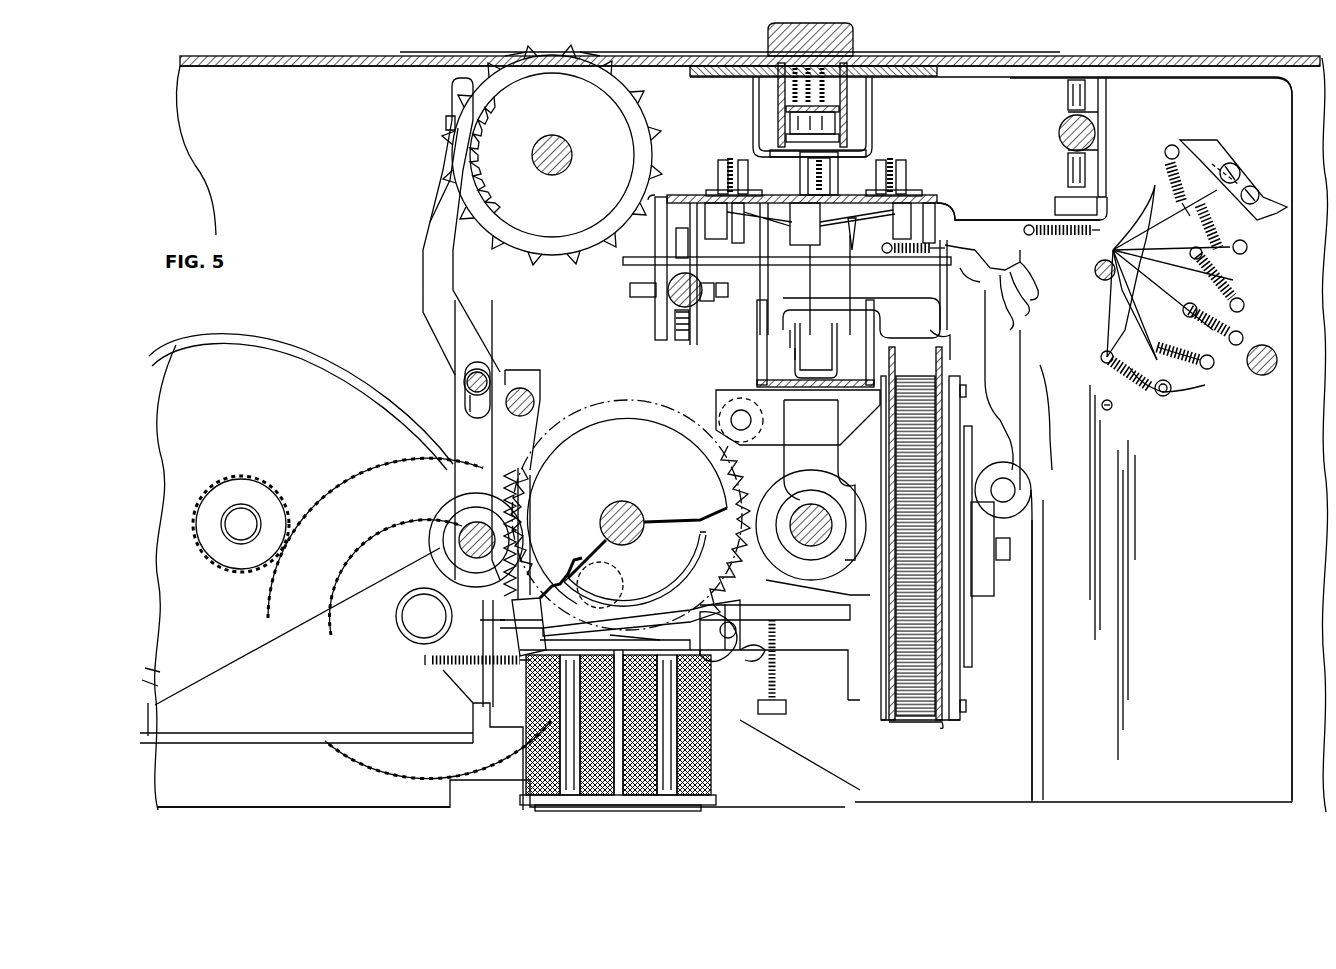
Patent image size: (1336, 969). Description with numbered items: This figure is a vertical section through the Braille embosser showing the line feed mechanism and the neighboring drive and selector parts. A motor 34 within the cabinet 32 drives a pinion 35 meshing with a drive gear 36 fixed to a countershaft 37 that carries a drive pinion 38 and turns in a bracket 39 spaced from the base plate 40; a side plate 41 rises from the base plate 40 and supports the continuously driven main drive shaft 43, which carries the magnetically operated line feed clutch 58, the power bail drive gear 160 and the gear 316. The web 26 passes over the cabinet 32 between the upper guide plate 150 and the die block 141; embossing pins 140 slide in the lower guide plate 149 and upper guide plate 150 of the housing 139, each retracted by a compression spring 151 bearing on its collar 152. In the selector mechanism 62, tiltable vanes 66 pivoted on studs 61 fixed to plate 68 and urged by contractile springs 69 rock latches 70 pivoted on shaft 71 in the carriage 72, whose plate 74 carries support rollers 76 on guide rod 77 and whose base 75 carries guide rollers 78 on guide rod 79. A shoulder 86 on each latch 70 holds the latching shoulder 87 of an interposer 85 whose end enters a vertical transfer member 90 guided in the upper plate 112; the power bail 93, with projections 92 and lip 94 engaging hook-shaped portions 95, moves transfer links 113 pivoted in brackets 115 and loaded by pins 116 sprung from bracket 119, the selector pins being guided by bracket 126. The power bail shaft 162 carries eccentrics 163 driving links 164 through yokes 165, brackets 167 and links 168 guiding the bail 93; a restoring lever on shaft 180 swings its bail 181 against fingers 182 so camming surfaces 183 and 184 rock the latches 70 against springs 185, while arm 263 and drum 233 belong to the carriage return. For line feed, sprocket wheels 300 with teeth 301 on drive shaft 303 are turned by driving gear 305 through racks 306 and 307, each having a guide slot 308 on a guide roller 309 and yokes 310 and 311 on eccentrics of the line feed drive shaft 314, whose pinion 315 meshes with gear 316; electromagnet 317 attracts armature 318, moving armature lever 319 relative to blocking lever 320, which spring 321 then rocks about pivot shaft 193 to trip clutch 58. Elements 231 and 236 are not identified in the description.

The web 26 is at (1216, 52).
The cabinet 32 is at (318, 55).
The motor 34 is at (296, 346).
The pinion 35 is at (238, 476).
The drive gear 36 is at (344, 472).
The countershaft 37 is at (396, 628).
The drive pinion 38 is at (333, 573).
The bracket 39 is at (240, 664).
The base plate 40 is at (496, 806).
The side plate 41 is at (1283, 92).
The main drive shaft 43 is at (612, 505).
The clutch 58 is at (688, 585).
The pivot studs 61 is at (1175, 388).
The selector mechanism 62 is at (1162, 409).
The tiltable vanes 66 is at (1222, 236).
The vertically extending plate 68 is at (1031, 750).
The contractile springs 69 is at (1166, 167).
The latches 70 is at (1152, 240).
The pivot shaft 71 is at (1113, 256).
The carriage 72 is at (993, 212).
The upwardly extending plate 74 is at (1107, 128).
The base 75 is at (627, 265).
The support rollers 76 is at (1067, 95).
The guide rod 77 is at (1059, 131).
The guide rollers 78 is at (676, 240).
The guide rod 79 is at (700, 300).
The interposers 85 is at (950, 305).
The shoulder 86 is at (1005, 262).
The latching shoulder 87 is at (1034, 310).
The vertical transfer member 90 is at (780, 238).
The power bail projections 92 is at (816, 350).
The power bail 93 is at (745, 358).
The horizontally extending lip 94 is at (886, 312).
The hook-shaped portion 95 is at (945, 335).
The upper plate 112 is at (930, 197).
The transfer link 113 is at (867, 239).
The brackets 115 is at (683, 197).
The pin 116 is at (731, 156).
The bracket 119 is at (718, 156).
The bracket 126 is at (800, 168).
The embossing pin housing 139 is at (858, 95).
The embossing pins 140 is at (786, 122).
The die block 141 is at (855, 35).
The lower guide plate 149 is at (838, 130).
The upper guide plate 150 is at (730, 62).
The compression spring 151 is at (836, 100).
The collar 152 is at (810, 108).
The power bail drive gear 160 is at (595, 402).
The power bail shaft 162 is at (806, 540).
The eccentric drive members 163 is at (822, 592).
The drive links 164 is at (846, 440).
The yokes 165 is at (836, 608).
The brackets 167 is at (770, 440).
The links 168 is at (716, 395).
The restoring lever shaft 180 is at (1014, 482).
The bail 181 is at (1020, 438).
The fingers 182 is at (1022, 322).
The camming surface 183 is at (1042, 292).
The camming surface 184 is at (975, 244).
The springs 185 is at (1055, 222).
The pivot shaft 193 is at (522, 388).
The drum 231 is at (918, 366).
The drum 233 is at (916, 725).
The nut 236 is at (1011, 552).
The horizontally extending arm 263 is at (808, 655).
The sprocket wheels 300 is at (512, 232).
The teeth 301 is at (535, 58).
The drive shaft 303 is at (552, 134).
The driving gear 305 is at (540, 235).
The driving rack 306 is at (422, 253).
The driving rack 307 is at (435, 205).
The guide slot 308 is at (480, 375).
The guide roller 309 is at (464, 381).
The driving yoke 310 is at (430, 578).
The driving yoke 311 is at (443, 498).
The line feed drive shaft 314 is at (459, 540).
The pinion 315 is at (520, 528).
The gear 316 is at (684, 536).
The line feed electromagnet 317 is at (712, 778).
The armature 318 is at (648, 625).
The armature lever 319 is at (480, 625).
The armature blocking lever 320 is at (528, 585).
The spring 321 is at (470, 662).